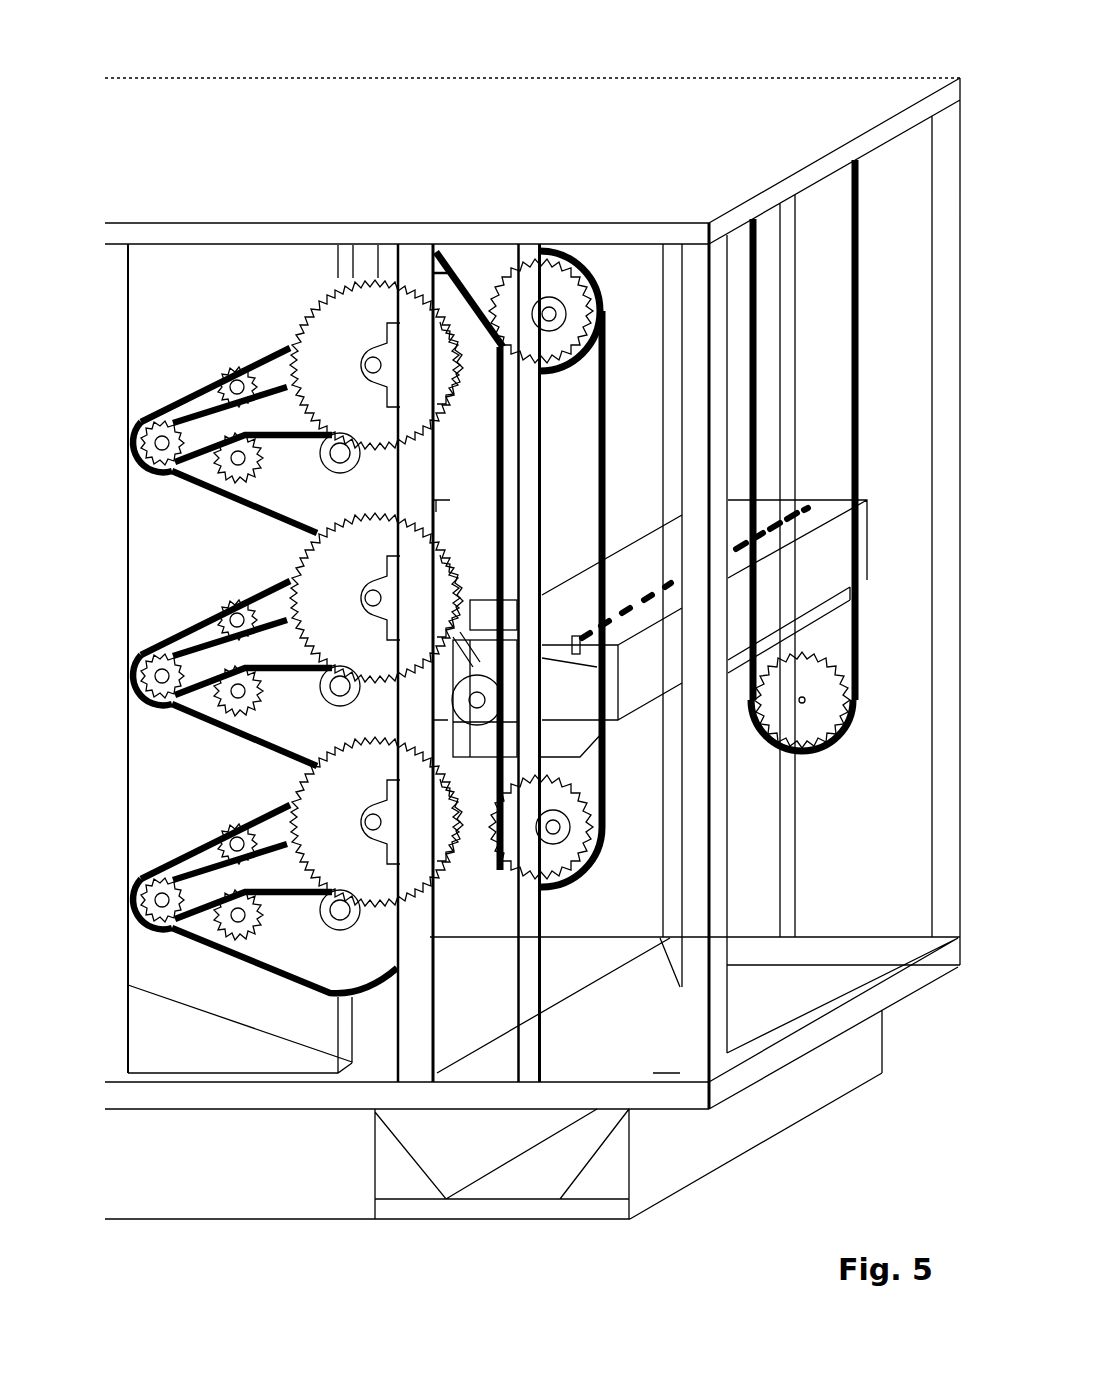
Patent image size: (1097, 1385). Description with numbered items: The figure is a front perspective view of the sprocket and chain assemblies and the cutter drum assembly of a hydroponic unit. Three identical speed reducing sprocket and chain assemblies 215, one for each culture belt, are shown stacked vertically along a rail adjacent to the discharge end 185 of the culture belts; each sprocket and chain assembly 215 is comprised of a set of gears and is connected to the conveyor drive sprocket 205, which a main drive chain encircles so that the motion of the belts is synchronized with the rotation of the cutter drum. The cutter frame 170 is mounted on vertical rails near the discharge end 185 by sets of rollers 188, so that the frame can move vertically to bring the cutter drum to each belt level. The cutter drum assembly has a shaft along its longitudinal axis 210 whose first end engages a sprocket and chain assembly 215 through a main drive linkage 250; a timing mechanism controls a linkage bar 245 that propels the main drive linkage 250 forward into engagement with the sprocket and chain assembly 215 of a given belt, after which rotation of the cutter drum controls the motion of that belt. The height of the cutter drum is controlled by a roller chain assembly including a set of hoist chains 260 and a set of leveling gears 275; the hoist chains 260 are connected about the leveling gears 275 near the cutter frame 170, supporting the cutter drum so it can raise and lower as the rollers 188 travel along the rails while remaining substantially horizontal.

The cutter frame 170 is at (418, 297).
The discharge end 185 is at (122, 993).
The rollers 188 is at (477, 700).
The conveyor drive sprocket 205 is at (163, 887).
The shaft along longitudinal axis 210 is at (742, 545).
The sprocket and chain assembly 215 is at (317, 790).
The linkage bar 245 is at (467, 700).
The main drive linkage 250 is at (480, 705).
The hoist chains 260 is at (853, 293).
The leveling gears 275 is at (581, 822).